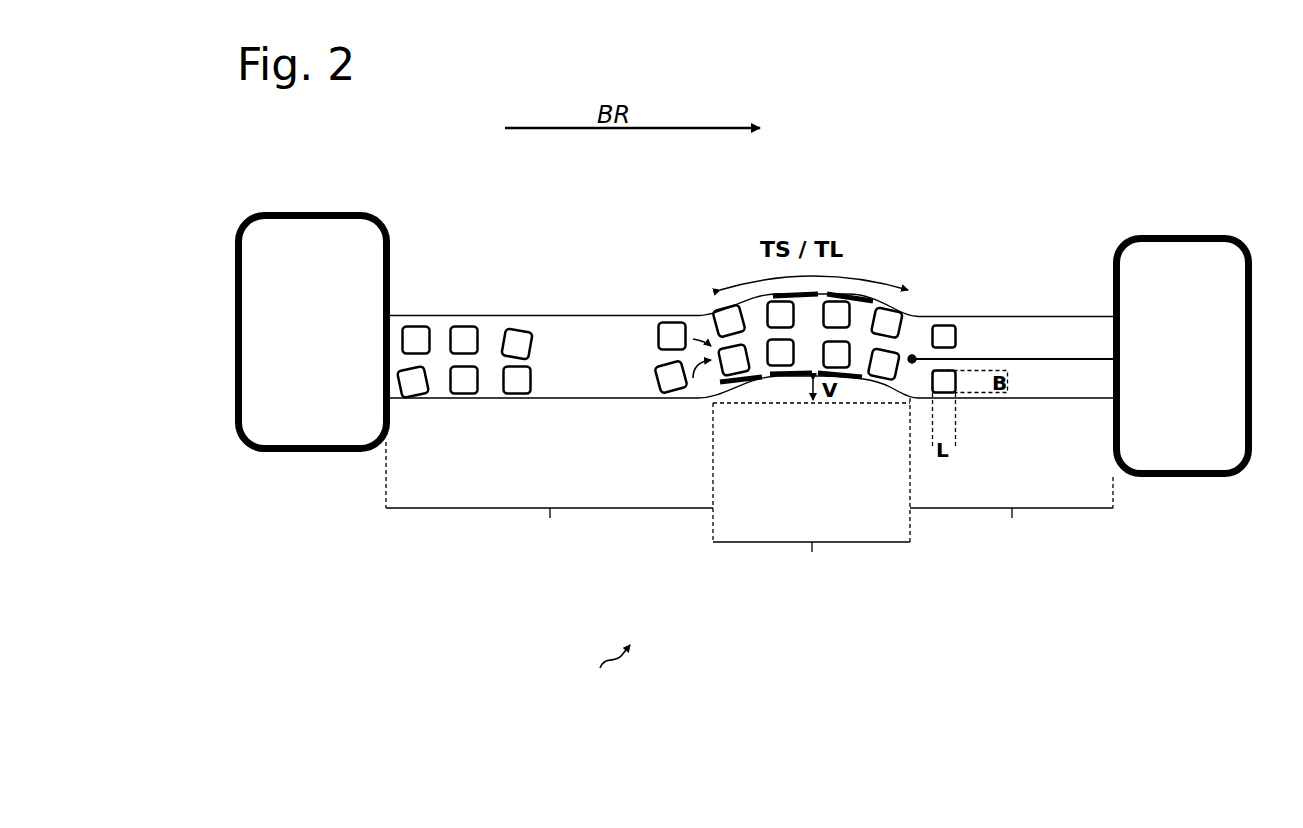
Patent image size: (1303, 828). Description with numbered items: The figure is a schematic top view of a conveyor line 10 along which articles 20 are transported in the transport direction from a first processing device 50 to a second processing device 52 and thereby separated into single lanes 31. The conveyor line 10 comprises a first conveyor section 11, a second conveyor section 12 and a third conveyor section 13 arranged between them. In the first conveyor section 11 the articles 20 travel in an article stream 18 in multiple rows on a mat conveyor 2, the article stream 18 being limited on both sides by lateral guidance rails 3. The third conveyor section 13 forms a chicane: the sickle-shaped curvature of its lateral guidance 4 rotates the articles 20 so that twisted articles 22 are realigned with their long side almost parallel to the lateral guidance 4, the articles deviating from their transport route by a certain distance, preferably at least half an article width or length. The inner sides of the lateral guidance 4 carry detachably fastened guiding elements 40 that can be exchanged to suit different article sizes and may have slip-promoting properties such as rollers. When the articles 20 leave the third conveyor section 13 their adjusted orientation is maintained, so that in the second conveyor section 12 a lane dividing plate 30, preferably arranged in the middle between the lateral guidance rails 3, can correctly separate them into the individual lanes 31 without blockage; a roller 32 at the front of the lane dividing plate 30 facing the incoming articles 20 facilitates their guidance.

The mat conveyor 2 is at (609, 369).
The lateral guidance rails 3 is at (547, 315).
The lateral guidance 4 is at (882, 297).
The conveyor line 10 is at (605, 672).
The first conveyor section 11 is at (549, 496).
The second conveyor section 12 is at (1011, 517).
The third conveyor section 13 is at (811, 493).
The article stream 18 is at (441, 360).
The articles 20 is at (409, 338).
The twisted articles 22 is at (663, 385).
The lane dividing plate 30 is at (985, 358).
The lanes 31 is at (1062, 351).
The roller 32 is at (913, 356).
The guiding elements 40 is at (853, 293).
The first processing device 50 is at (322, 339).
The second processing device 52 is at (1190, 359).